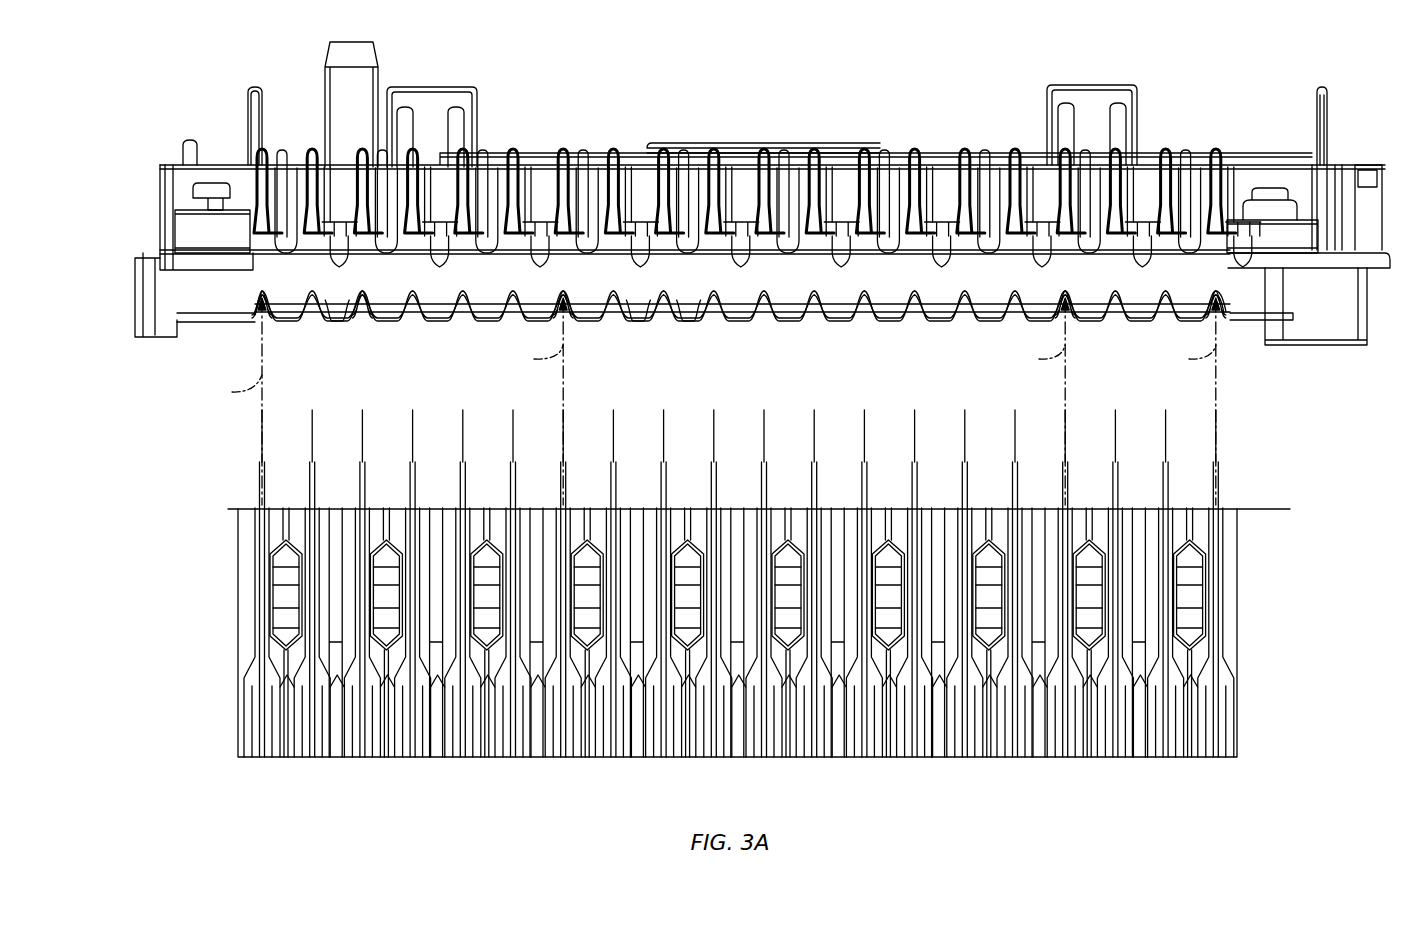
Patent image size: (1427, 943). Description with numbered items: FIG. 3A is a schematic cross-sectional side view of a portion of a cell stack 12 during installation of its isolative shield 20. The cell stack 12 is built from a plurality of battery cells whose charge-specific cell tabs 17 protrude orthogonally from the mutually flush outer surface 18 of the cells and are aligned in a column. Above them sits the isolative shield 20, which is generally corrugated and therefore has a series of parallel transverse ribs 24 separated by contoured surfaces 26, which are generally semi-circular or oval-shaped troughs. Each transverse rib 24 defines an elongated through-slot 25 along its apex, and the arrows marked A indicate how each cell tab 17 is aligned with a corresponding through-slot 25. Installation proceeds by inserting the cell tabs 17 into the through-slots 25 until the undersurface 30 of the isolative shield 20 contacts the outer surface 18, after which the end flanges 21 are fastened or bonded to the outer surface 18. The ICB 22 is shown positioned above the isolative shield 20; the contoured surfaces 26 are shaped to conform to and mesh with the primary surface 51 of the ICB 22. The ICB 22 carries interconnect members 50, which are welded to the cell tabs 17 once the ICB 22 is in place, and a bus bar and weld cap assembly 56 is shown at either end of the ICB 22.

The cell stack 12 is at (220, 745).
The cell tab 17 is at (1238, 507).
The outer surface 18 is at (1272, 508).
The isolative shield 20 is at (1230, 330).
The end flange 21 is at (210, 313).
The ICB 22 is at (1150, 77).
The transverse rib 24 is at (265, 289).
The through-slot 25 is at (258, 292).
The contoured surface 26 is at (345, 318).
The undersurface 30 is at (250, 330).
The interconnect member 50 is at (600, 148).
The primary surface 51 is at (688, 250).
The bus bar and weld cap assembly 56 is at (200, 238).